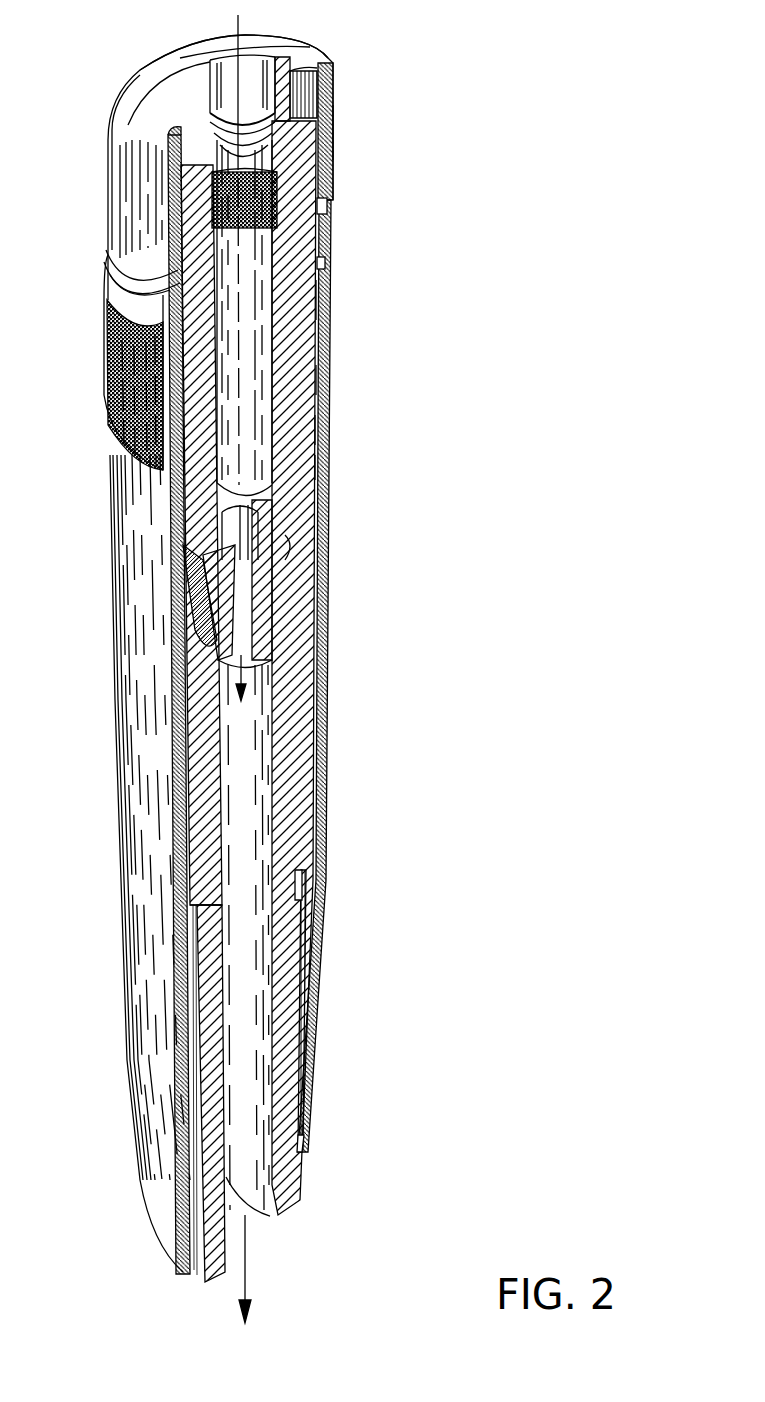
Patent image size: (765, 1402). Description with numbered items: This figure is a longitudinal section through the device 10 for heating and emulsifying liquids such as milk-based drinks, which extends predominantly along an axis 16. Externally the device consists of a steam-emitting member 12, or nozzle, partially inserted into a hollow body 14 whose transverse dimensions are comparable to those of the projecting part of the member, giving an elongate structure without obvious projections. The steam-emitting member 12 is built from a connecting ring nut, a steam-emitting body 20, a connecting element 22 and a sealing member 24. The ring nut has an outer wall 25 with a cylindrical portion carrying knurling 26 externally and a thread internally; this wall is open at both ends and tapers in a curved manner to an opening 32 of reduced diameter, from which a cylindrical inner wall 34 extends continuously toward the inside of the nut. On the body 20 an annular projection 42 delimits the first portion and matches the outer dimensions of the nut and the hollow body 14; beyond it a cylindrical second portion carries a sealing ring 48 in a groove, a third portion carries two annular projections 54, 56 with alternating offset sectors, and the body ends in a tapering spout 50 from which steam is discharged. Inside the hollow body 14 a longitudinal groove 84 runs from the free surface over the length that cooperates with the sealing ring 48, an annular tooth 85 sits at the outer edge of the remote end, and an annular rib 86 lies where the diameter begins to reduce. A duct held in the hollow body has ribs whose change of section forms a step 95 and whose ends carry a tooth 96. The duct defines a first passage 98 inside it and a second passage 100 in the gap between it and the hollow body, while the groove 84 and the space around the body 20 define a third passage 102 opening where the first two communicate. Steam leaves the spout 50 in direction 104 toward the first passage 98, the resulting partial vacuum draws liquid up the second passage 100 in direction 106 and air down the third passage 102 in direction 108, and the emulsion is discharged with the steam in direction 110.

The device for heating and emulsifying liquids 10 is at (466, 145).
The steam-emitting member 12 is at (183, 653).
The hollow body 14 is at (333, 680).
The axis 16 is at (300, 38).
The steam-emitting body 20 is at (292, 346).
The connecting element 22 is at (180, 172).
The sealing member 24 is at (106, 265).
The outer wall 25 is at (334, 157).
The knurling 26 is at (108, 218).
The opening 32 is at (262, 82).
The inner wall 34 is at (300, 126).
The annular projection 42 is at (110, 322).
The sealing ring 48 is at (320, 266).
The spout 50 is at (182, 598).
The annular projection 54 is at (322, 378).
The annular projection 56 is at (322, 467).
The longitudinal groove 84 is at (322, 300).
The annular tooth 85 is at (178, 1262).
The annular rib 86 is at (200, 908).
The step 95 is at (297, 872).
The tooth 96 is at (297, 1138).
The first passage 98 is at (260, 812).
The second passage 100 is at (205, 1073).
The third passage 102 is at (318, 430).
The steam discharge direction 104 is at (222, 680).
The liquid draw-in direction 106 is at (300, 548).
The air draw-in direction 108 is at (345, 212).
The emulsion discharge direction 110 is at (248, 1270).